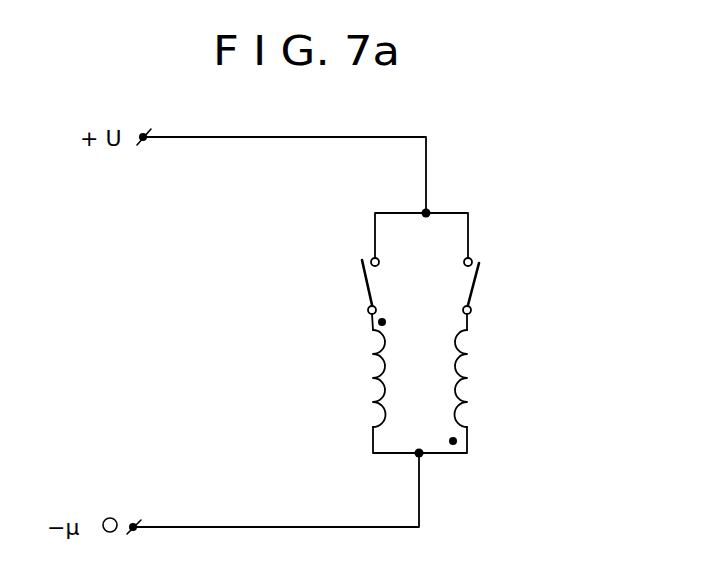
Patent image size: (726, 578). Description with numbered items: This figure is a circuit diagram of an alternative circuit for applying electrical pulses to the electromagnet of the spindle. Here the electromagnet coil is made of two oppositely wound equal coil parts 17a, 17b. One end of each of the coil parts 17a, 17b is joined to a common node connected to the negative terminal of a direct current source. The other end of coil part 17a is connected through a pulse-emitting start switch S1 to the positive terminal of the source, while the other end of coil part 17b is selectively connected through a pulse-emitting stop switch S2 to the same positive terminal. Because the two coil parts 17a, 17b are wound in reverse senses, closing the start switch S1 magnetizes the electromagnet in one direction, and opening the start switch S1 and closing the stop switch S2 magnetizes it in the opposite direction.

The coil part 17a is at (376, 392).
The coil part 17b is at (467, 352).
The start switch S1 is at (369, 293).
The stop switch S2 is at (473, 290).